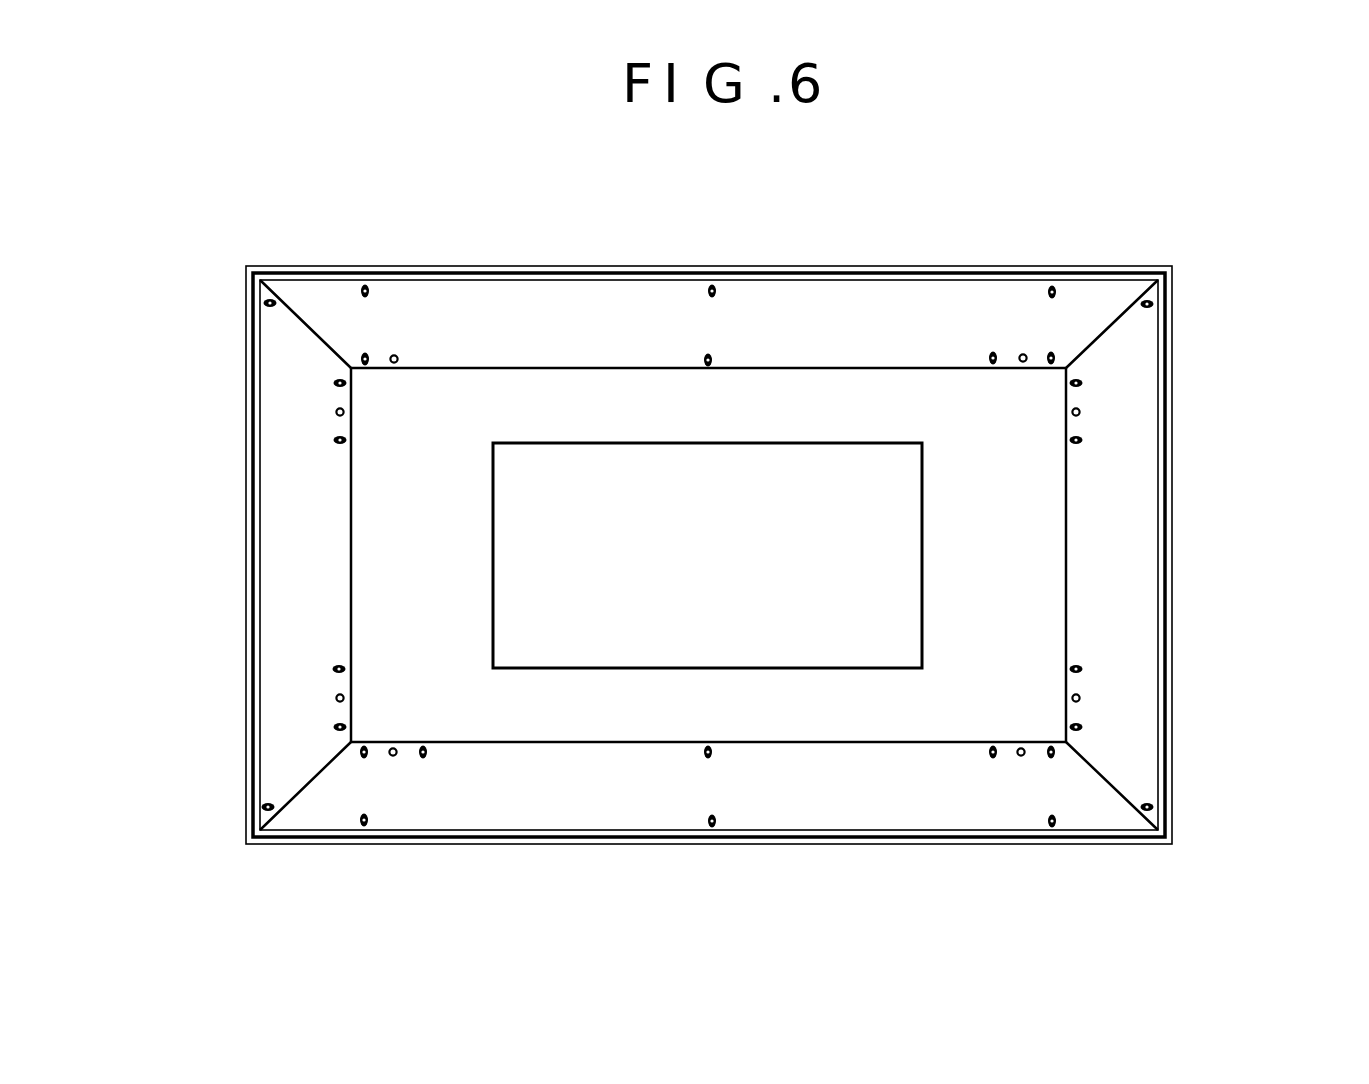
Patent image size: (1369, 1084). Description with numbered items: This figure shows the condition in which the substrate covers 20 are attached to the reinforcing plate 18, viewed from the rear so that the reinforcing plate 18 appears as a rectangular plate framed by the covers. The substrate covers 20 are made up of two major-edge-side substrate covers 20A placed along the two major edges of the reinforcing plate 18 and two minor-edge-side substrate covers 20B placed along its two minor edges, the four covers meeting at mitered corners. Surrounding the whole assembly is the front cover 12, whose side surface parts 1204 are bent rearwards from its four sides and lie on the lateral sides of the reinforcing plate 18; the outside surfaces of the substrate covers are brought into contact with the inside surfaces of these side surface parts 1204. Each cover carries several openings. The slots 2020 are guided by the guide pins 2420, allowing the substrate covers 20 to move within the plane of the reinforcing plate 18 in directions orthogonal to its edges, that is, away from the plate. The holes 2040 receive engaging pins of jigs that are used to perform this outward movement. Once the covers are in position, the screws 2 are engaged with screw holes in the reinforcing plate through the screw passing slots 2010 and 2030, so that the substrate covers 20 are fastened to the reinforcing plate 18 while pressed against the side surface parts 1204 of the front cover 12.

The front cover 12 is at (1175, 677).
The side surface parts 1204 is at (1167, 728).
The reinforcing plate 18 is at (852, 403).
The substrate covers 20 is at (1128, 572).
The major-edge-side substrate covers 20A is at (517, 313).
The minor-edge-side substrate covers 20B is at (288, 491).
The screws 2 is at (369, 291).
The screw passing slots 2010 is at (716, 291).
The slots 2020 is at (337, 668).
The screw passing slots 2030 is at (712, 361).
The holes 2040 is at (1023, 354).
The guide pins 2420 is at (497, 880).